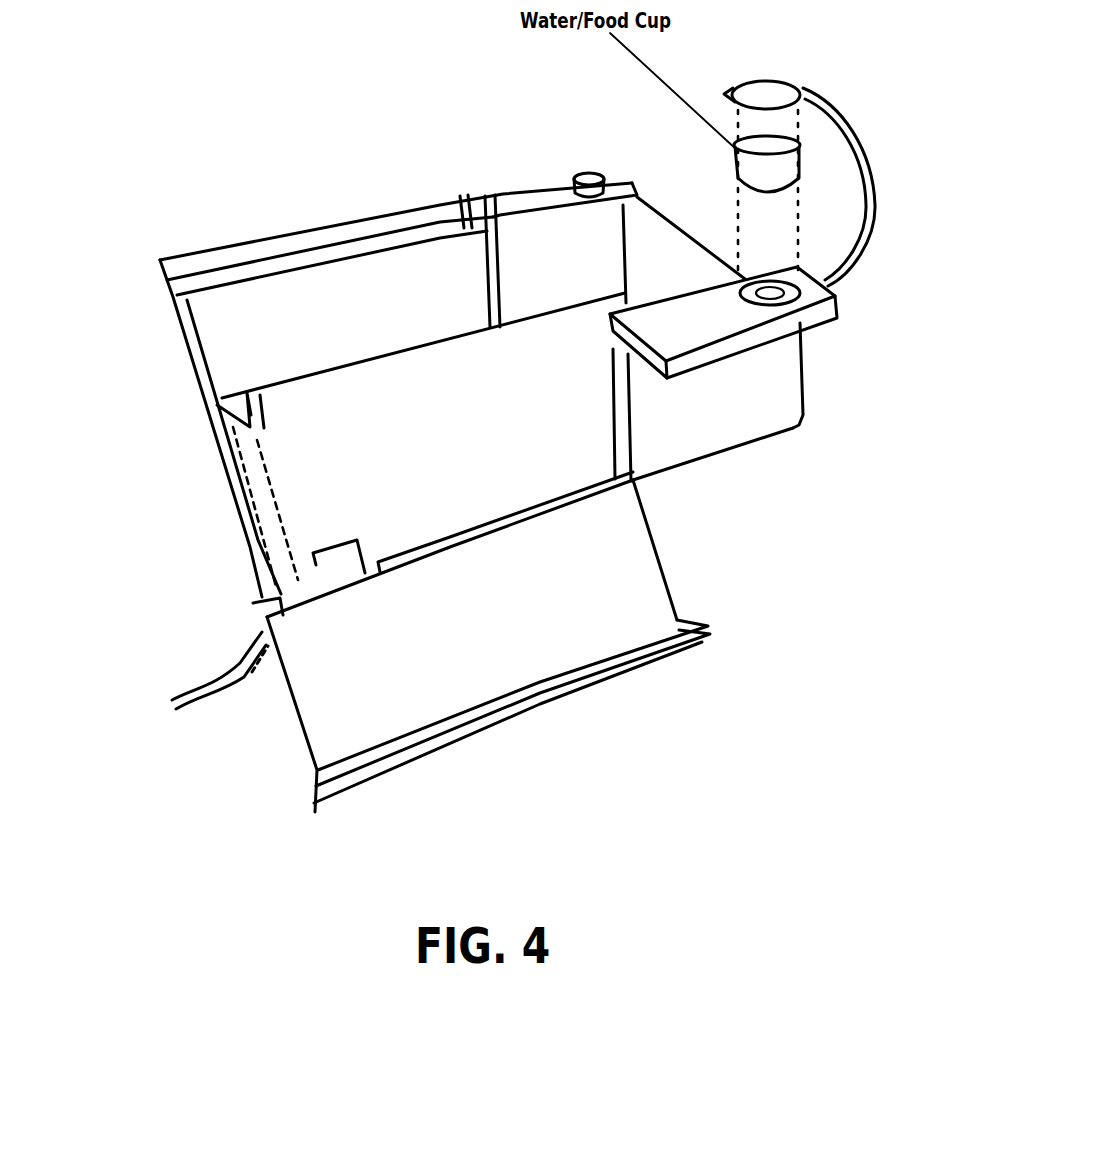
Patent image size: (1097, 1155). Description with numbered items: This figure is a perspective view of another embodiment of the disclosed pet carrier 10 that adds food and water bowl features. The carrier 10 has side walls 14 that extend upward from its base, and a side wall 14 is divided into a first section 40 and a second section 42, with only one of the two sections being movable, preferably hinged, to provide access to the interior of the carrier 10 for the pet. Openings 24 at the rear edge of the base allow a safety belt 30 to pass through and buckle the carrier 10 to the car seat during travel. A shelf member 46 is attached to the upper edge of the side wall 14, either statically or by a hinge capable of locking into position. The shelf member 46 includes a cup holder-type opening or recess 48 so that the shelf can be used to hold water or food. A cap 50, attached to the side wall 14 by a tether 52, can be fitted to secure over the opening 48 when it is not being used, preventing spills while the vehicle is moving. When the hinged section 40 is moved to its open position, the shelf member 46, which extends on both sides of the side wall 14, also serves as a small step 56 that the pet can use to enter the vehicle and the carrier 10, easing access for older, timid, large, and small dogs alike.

The carrier 10 is at (452, 310).
The side wall 14 is at (243, 317).
The opening 24 is at (323, 570).
The safety belt 30 is at (260, 663).
The first section 40 is at (645, 553).
The second section 42 is at (730, 418).
The shelf member 46 is at (500, 194).
The cup holder-type opening 48 is at (753, 297).
The cap 50 is at (790, 91).
The tether 52 is at (873, 207).
The step 56 is at (552, 733).